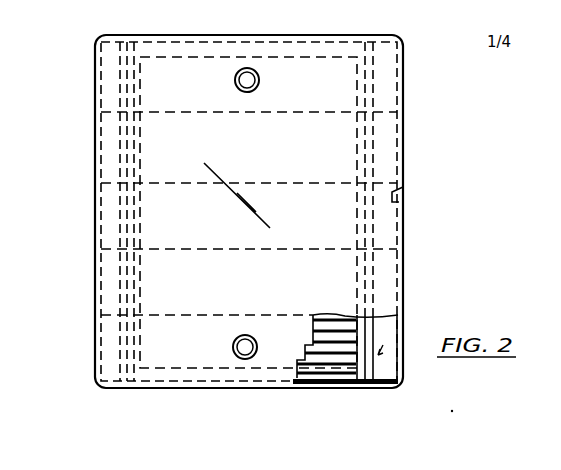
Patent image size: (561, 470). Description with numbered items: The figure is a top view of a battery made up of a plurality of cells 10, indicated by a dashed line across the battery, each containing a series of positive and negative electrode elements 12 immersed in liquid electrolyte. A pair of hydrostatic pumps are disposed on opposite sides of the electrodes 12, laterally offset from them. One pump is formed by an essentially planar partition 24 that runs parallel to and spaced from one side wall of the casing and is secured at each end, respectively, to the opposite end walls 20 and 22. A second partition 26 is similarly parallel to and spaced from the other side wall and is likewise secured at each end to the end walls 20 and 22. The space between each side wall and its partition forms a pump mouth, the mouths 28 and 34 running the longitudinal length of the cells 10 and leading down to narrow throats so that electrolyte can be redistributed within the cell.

The battery cell 10 is at (397, 98).
The positive and negative electrode elements 12 is at (355, 88).
The end wall 20 is at (311, 40).
The end wall 22 is at (313, 386).
The partition (wall) 24 is at (342, 384).
The second partition (wall) 26 is at (124, 282).
The pump mouth (inlet) 28 is at (405, 188).
The mouth 34 is at (101, 218).